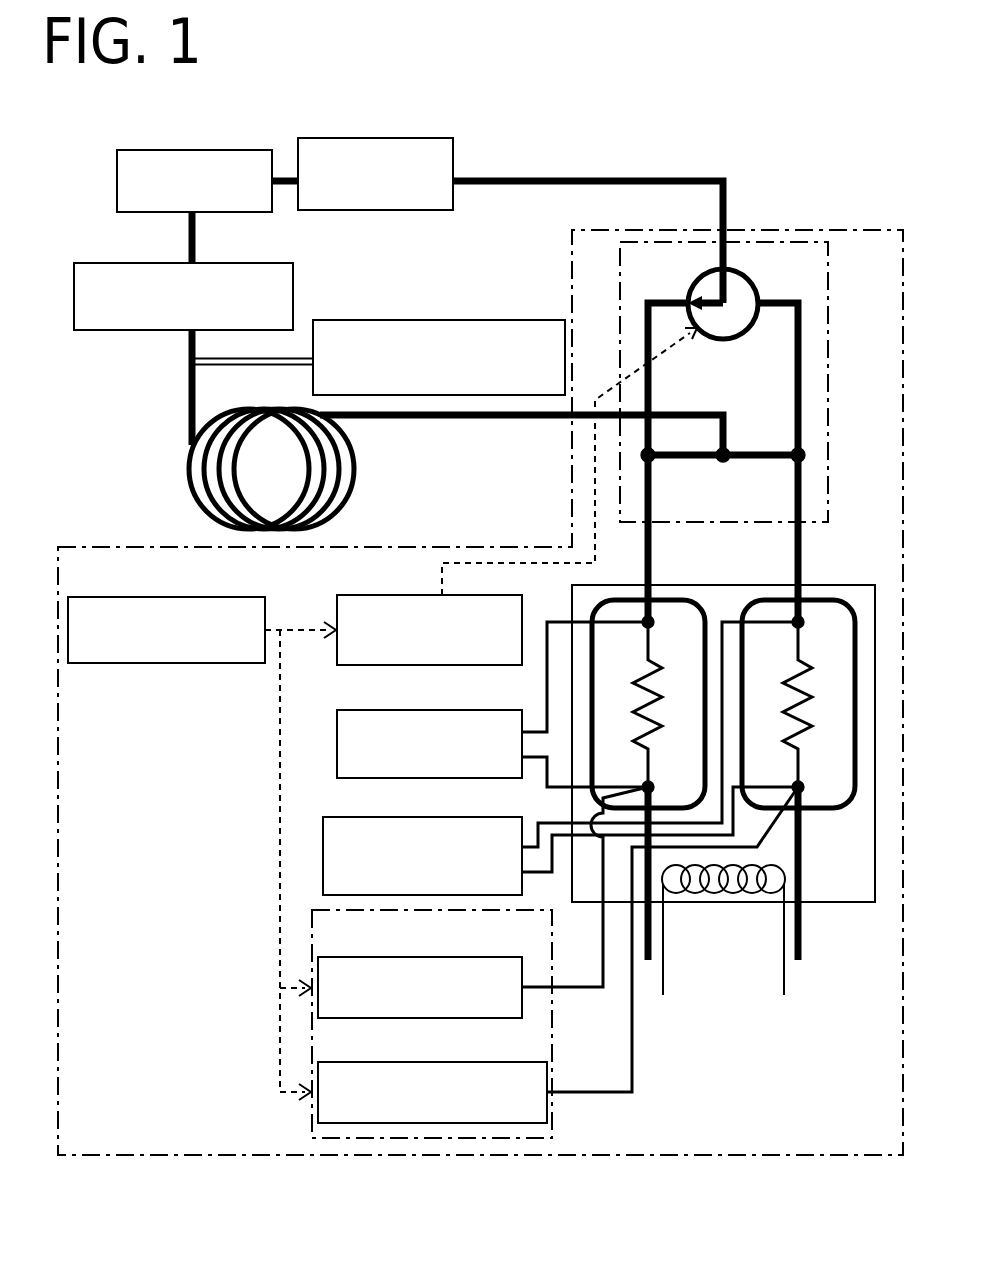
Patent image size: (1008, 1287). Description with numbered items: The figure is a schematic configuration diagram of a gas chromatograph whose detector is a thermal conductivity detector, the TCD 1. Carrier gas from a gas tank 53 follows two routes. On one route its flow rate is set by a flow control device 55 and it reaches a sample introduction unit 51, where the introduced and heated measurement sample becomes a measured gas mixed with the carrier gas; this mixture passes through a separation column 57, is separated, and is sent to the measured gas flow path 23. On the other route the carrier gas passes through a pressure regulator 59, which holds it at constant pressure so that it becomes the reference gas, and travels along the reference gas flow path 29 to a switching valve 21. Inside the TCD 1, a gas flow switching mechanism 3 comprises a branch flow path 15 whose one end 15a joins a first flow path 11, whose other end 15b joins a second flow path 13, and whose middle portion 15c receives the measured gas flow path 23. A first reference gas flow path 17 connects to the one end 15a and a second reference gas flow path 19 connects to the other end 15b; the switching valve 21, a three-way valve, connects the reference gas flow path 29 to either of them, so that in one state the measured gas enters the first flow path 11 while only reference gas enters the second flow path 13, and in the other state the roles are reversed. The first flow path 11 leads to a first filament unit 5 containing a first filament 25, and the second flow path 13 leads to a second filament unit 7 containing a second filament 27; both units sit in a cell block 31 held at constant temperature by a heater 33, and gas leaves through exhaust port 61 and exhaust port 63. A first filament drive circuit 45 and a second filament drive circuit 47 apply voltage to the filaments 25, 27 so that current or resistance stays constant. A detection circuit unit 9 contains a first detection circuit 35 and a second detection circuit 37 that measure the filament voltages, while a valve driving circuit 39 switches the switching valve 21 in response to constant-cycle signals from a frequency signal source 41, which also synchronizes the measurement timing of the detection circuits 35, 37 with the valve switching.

The TCD 1 is at (112, 545).
The gas flow switching mechanism 3 is at (830, 289).
The first filament unit 5 is at (670, 600).
The second filament unit 7 is at (820, 600).
The detection circuit unit 9 is at (553, 1023).
The first flow path 11 is at (644, 492).
The second flow path 13 is at (805, 492).
The branch flow path 15 is at (757, 450).
The one end of branch flow path 15a is at (660, 462).
The other end of branch flow path 15b is at (805, 452).
The middle portion of branch flow path 15c is at (728, 462).
The first reference gas flow path 17 is at (663, 302).
The second reference gas flow path 19 is at (788, 302).
The switching valve 21 is at (738, 340).
The measured gas flow path 23 is at (477, 421).
The first filament 25 is at (657, 663).
The second filament 27 is at (807, 663).
The reference gas flow path 29 is at (575, 177).
The cell block 31 is at (853, 903).
The heater 33 is at (722, 897).
The first detection circuit 35 is at (467, 957).
The second detection circuit 37 is at (467, 1062).
The valve driving circuit 39 is at (390, 597).
The frequency signal source 41 is at (126, 597).
The first filament drive circuit 45 is at (466, 710).
The second filament drive circuit 47 is at (466, 817).
The sample introduction unit 51 is at (493, 318).
The gas tank 53 is at (232, 150).
The flow control device 55 is at (73, 287).
The separation column 57 is at (351, 492).
The pressure regulator 59 is at (415, 137).
The exhaust port 61 is at (652, 930).
The exhaust port 63 is at (801, 930).